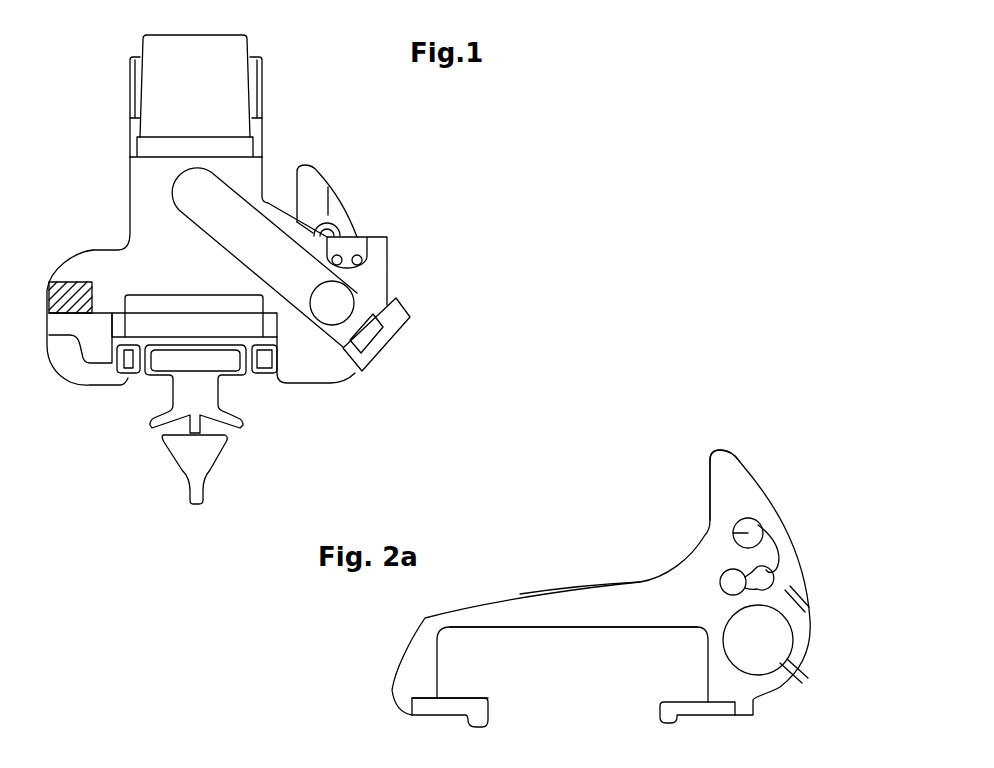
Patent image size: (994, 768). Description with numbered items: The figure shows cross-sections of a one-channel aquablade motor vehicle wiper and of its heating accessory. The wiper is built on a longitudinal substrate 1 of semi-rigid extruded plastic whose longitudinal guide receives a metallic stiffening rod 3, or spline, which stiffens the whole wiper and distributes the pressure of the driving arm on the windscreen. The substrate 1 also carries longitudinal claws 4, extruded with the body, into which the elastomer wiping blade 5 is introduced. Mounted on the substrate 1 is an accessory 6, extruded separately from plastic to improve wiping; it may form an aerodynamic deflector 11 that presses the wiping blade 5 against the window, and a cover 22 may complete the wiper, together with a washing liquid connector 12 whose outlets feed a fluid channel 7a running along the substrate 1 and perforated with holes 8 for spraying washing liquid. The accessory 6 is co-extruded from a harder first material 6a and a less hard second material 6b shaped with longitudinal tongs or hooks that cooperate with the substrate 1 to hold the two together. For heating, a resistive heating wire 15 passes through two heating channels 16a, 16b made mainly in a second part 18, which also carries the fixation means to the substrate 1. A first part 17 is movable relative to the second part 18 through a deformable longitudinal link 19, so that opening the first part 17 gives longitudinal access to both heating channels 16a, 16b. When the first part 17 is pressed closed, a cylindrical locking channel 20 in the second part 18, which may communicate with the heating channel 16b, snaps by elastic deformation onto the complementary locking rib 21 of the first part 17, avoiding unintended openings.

In FIG. 1, the longitudinal substrate 1 is at (255, 378).
In FIG. 1, the stiffening rod 3 is at (138, 320).
In FIG. 1, the longitudinal claws 4 is at (157, 380).
In FIG. 1, the wiping blade 5 is at (195, 473).
In FIG. 1, the accessory 6 is at (298, 156).
In FIG. 2A, the accessory 6 is at (588, 536).
In FIG. 2A, the first material 6a is at (542, 598).
In FIG. 2A, the second material 6b is at (462, 707).
In FIG. 1, the fluid channel 7a is at (353, 292).
In FIG. 2A, the fluid channel 7a is at (770, 643).
In FIG. 2A, the holes 8 is at (793, 677).
In FIG. 1, the aerodynamic deflector 11 is at (312, 178).
In FIG. 2A, the aerodynamic deflector 11 is at (730, 467).
In FIG. 1, the washing liquid connector 12 is at (152, 127).
In FIG. 1, the heating wire 15 is at (333, 187).
In FIG. 2A, the first heating channel 16a is at (733, 533).
In FIG. 2A, the second heating channel 16b is at (720, 582).
In FIG. 2A, the first part 17 is at (810, 593).
In FIG. 2A, the second part 18 is at (583, 628).
In FIG. 2A, the longitudinal link 19 is at (790, 517).
In FIG. 2A, the locking channel 20 is at (787, 577).
In FIG. 2A, the complementary locking rib 21 is at (802, 563).
In FIG. 1, the cover 22 is at (363, 203).